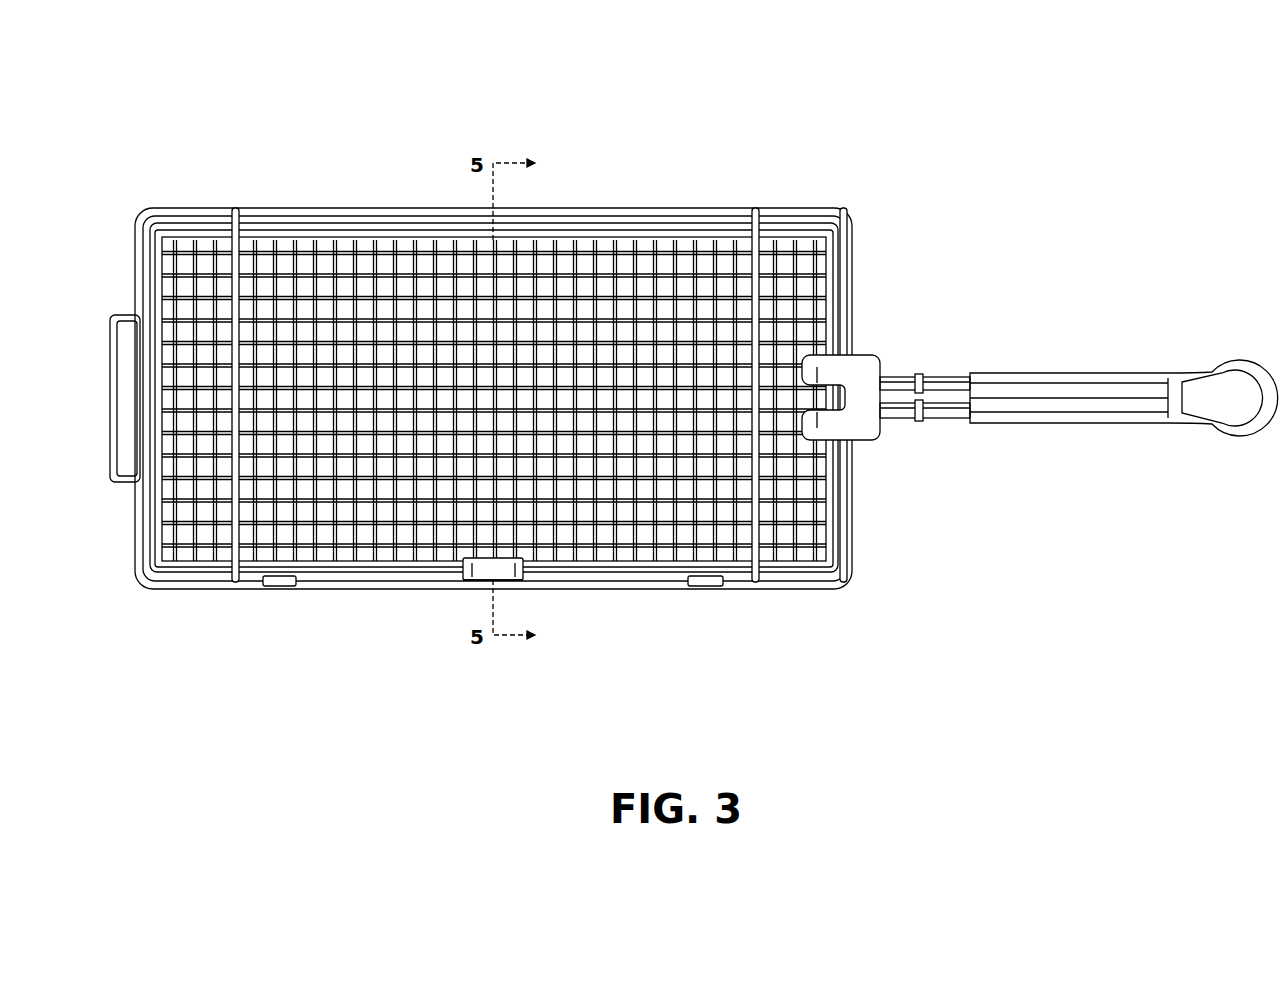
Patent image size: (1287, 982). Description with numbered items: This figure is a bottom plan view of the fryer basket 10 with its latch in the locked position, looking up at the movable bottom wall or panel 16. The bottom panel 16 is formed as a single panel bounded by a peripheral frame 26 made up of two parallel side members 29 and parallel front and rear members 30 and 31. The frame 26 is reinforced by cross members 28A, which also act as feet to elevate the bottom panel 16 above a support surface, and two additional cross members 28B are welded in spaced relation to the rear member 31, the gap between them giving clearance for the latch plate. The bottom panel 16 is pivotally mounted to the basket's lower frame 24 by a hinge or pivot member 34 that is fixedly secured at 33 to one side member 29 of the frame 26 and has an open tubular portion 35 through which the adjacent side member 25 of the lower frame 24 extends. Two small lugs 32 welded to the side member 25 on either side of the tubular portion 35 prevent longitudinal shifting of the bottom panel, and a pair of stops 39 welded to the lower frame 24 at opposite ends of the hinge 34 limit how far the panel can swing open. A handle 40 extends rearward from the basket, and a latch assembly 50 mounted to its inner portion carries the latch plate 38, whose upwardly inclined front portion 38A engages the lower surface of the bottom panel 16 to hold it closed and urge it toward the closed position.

The fryer basket 10 is at (698, 130).
The bottom wall or panel 16 is at (442, 263).
The lower frame 24 is at (222, 578).
The side member 25 is at (370, 577).
The peripheral frame 26 is at (345, 229).
The cross members 28A is at (236, 210).
The additional cross members 28B is at (845, 210).
The side members 29 is at (605, 233).
The front member 30 is at (178, 518).
The rear member 31 is at (808, 516).
The lugs 32 is at (454, 578).
The weld location 33 is at (472, 565).
The hinge or pivot member 34 is at (482, 594).
The open tubular portion 35 is at (515, 577).
The latch plate 38 is at (863, 358).
The front portion of the latch plate 38A is at (808, 366).
The stops 39 is at (272, 587).
The handle 40 is at (1095, 362).
The latch assembly 50 is at (888, 443).